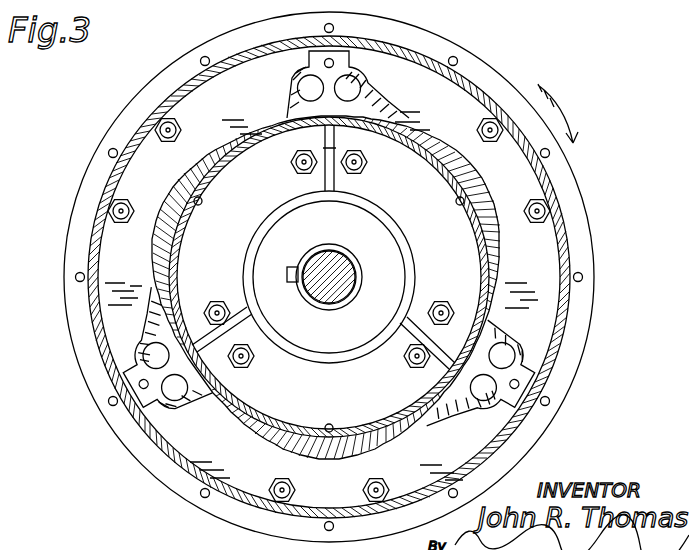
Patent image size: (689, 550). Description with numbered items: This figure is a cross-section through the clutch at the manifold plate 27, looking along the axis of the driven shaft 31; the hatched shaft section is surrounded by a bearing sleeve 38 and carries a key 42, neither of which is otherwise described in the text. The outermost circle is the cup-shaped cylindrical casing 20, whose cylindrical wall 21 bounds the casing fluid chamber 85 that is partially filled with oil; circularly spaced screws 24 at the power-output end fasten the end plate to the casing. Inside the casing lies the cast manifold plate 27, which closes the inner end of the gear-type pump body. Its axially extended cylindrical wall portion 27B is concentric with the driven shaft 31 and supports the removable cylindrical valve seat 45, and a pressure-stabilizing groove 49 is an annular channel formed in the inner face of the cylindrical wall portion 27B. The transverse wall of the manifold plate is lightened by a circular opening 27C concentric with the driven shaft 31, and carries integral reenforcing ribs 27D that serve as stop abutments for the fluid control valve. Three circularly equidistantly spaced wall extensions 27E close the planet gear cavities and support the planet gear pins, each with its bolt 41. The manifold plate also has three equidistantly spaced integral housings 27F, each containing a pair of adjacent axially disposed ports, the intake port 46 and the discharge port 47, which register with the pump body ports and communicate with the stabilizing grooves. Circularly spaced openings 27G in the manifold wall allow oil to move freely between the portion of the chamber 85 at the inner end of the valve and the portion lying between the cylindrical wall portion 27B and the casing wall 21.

The cup-shaped cylindrical casing 20 is at (473, 80).
The cylindrical wall 21 is at (492, 98).
The circularly spaced screws 24 is at (108, 399).
The manifold plate 27 is at (283, 59).
The cylindrical wall portion 27B is at (545, 198).
The circular opening 27C is at (280, 228).
The reenforcing ribs 27D is at (439, 300).
The wall extensions 27E is at (273, 477).
The housings 27F is at (362, 68).
The circularly spaced openings 27G is at (420, 446).
The driven shaft 31 is at (348, 262).
The bearing sleeve 38 is at (385, 272).
The bolt 41 is at (325, 426).
The key 42 is at (295, 262).
The cylindrical valve seat 45 is at (480, 298).
The intake port 46 is at (481, 392).
The discharge port 47 is at (172, 386).
The pressure-stabilizing groove 49 is at (480, 215).
The casing fluid chamber 85 is at (214, 471).